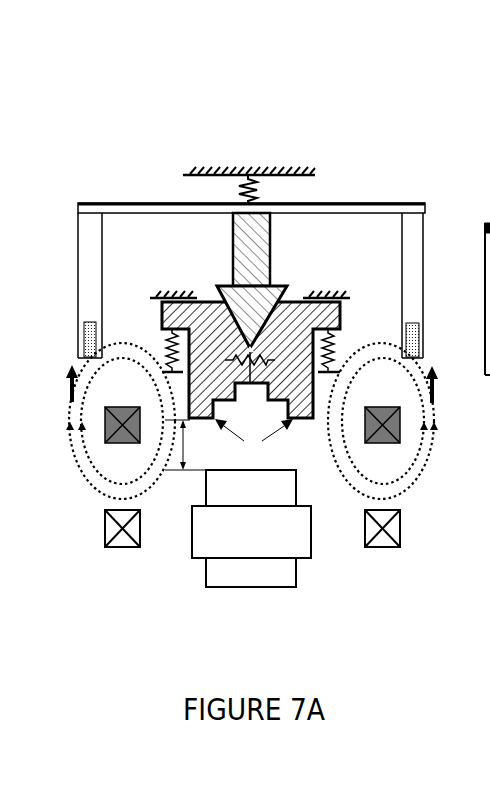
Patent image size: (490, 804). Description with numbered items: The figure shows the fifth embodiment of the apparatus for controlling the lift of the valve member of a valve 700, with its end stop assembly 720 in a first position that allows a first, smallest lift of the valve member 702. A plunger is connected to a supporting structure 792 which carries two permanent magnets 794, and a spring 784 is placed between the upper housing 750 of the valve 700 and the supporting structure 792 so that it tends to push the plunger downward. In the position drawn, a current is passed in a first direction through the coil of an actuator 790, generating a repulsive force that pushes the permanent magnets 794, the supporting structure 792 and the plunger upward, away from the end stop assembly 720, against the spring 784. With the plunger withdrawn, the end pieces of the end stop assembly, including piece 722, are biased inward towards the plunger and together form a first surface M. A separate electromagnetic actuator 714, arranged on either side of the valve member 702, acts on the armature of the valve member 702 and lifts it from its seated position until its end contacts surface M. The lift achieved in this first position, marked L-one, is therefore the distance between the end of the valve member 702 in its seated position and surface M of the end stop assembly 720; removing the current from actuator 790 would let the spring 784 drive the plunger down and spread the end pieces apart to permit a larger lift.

The valve 700 is at (100, 97).
The valve member 702 is at (265, 568).
The actuator 714 is at (105, 535).
The end stop assembly 720 is at (324, 400).
The piece 722 is at (485, 324).
The upper housing 750 is at (270, 172).
The spring 784 is at (246, 177).
The actuator 790 is at (120, 446).
The supporting structure 792 is at (348, 201).
The permanent magnets 794 is at (411, 323).